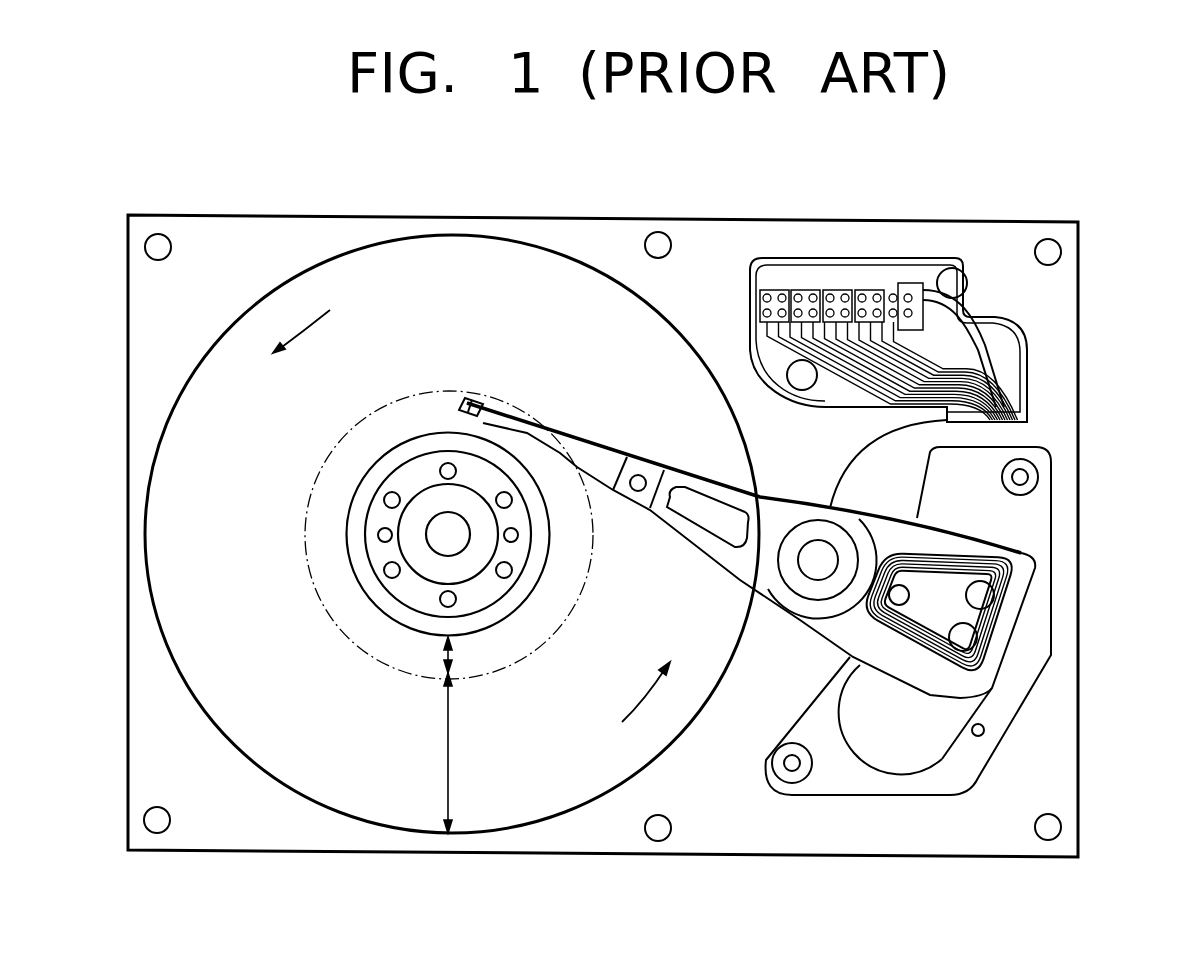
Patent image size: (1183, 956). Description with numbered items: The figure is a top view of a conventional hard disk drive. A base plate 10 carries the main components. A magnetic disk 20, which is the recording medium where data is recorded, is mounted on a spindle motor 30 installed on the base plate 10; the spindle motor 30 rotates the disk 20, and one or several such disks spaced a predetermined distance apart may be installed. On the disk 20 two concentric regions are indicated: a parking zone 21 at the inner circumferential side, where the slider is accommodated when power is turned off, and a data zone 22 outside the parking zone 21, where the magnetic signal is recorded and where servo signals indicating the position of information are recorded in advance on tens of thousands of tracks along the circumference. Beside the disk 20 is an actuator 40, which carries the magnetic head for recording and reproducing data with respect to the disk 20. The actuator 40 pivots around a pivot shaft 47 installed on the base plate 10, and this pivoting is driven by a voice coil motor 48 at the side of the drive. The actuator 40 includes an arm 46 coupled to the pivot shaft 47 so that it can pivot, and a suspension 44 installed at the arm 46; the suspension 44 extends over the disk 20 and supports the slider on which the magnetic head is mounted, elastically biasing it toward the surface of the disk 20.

The base plate 10 is at (252, 233).
The magnetic disk 20 is at (503, 237).
The parking zone 21 is at (447, 655).
The data zone 22 is at (447, 737).
The spindle motor 30 is at (412, 520).
The actuator 40 is at (747, 554).
The suspension 44 is at (578, 446).
The arm 46 is at (672, 520).
The pivot shaft 47 is at (813, 560).
The voice coil motor 48 is at (952, 750).